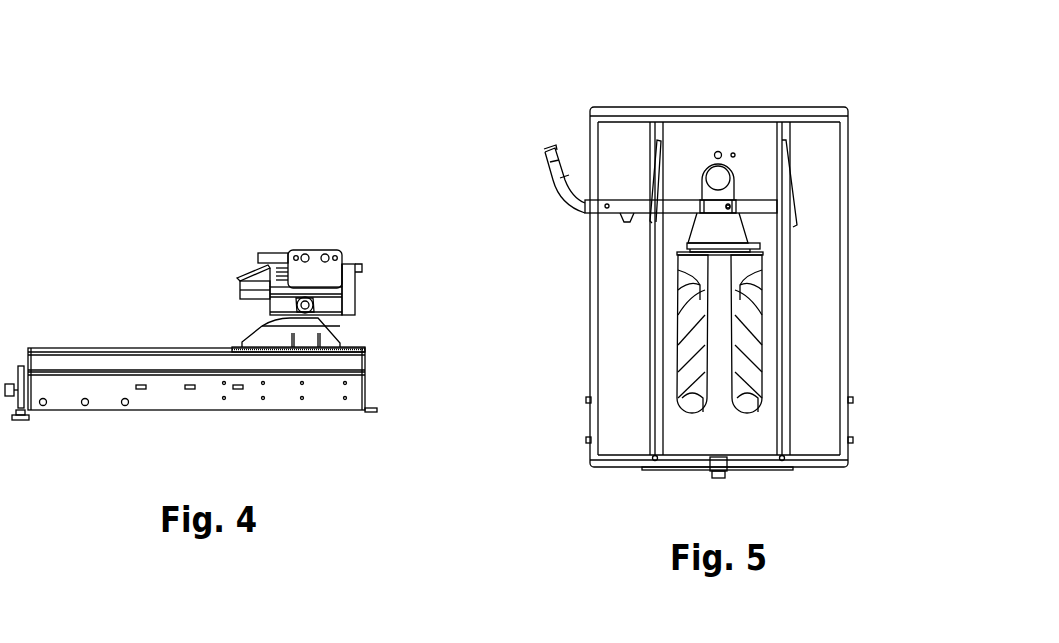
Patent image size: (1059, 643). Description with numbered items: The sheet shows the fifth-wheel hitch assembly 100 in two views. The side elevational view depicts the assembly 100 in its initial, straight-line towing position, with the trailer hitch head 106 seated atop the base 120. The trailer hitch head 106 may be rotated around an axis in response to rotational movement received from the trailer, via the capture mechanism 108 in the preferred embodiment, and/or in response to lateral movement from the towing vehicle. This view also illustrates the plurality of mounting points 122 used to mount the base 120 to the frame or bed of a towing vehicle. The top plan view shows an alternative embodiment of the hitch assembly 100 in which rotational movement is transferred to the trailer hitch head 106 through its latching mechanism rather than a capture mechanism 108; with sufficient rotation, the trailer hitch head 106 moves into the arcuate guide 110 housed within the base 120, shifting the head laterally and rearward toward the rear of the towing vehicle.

In FIG. 4, the hitch assembly 100 is at (157, 302).
In FIG. 5, the hitch assembly 100 is at (587, 68).
In FIG. 4, the trailer hitch head 106 is at (348, 287).
In FIG. 5, the trailer hitch head 106 is at (767, 228).
In FIG. 4, the capture mechanism 108 is at (317, 250).
In FIG. 5, the arcuate guide 110 is at (745, 407).
In FIG. 4, the base 120 is at (366, 372).
In FIG. 5, the base 120 is at (847, 322).
In FIG. 4, the mounting points 122 is at (345, 385).